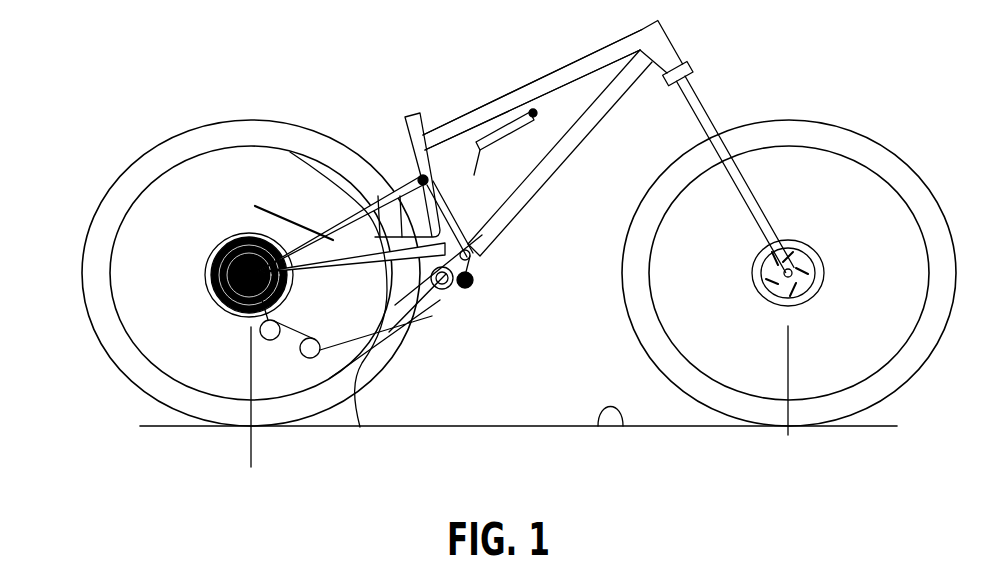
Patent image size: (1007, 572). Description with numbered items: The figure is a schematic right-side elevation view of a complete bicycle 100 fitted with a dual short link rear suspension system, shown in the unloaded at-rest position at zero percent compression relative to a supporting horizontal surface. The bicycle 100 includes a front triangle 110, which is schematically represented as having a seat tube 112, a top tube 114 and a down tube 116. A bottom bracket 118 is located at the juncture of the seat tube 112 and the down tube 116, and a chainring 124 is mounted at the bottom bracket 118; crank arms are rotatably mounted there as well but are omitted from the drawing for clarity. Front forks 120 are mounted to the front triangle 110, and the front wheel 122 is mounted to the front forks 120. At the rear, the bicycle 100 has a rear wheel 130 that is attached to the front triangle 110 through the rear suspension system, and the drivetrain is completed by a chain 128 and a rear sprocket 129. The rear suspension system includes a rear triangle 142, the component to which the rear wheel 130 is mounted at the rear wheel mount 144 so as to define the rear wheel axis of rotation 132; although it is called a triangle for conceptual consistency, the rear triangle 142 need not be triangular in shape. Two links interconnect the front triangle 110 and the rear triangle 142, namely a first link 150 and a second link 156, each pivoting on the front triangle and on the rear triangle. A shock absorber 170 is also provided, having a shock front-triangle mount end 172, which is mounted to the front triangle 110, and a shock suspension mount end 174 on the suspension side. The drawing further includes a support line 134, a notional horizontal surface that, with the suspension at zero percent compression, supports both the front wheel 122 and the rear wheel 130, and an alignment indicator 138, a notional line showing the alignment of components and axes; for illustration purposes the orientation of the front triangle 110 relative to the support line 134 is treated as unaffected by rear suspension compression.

The bicycle 100 is at (532, 58).
The front triangle 110 is at (494, 95).
The seat tube 112 is at (418, 160).
The top tube 114 is at (575, 72).
The down tube 116 is at (612, 95).
The bottom bracket 118 is at (445, 300).
The front forks 120 is at (712, 112).
The front wheel 122 is at (852, 137).
The chainring 124 is at (408, 235).
The chain 128 is at (360, 427).
The rear sprocket 129 is at (236, 308).
The rear wheel 130 is at (172, 145).
The rear wheel axis of rotation 132 is at (243, 303).
The support line 134 is at (623, 426).
The alignment indicator 138 is at (282, 217).
The rear triangle 142 is at (352, 220).
The rear wheel mount 144 is at (208, 258).
The first link 150 is at (470, 284).
The second link 156 is at (372, 300).
The shock absorber 170 is at (483, 147).
The shock front-triangle mount end 172 is at (545, 137).
The shock suspension mount end 174 is at (437, 183).